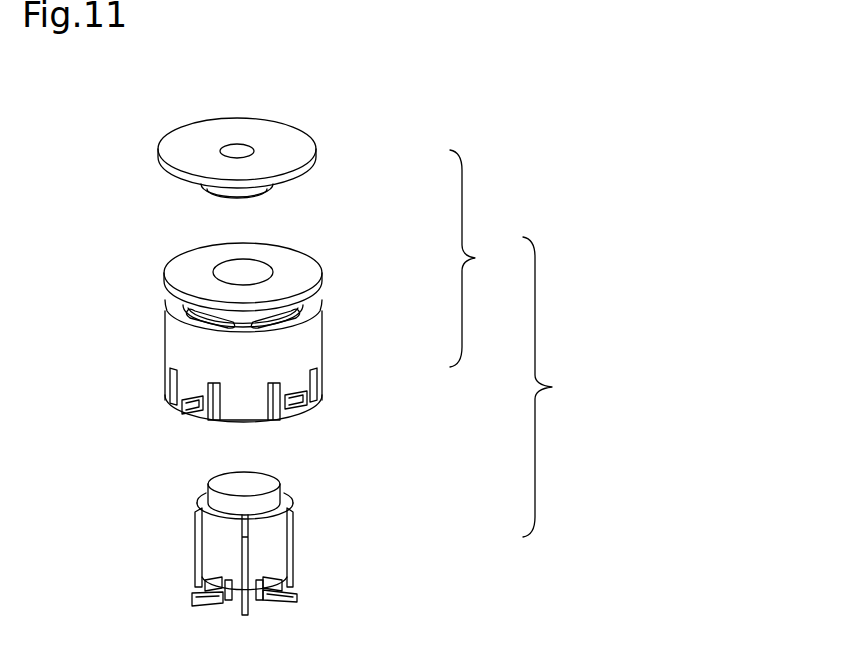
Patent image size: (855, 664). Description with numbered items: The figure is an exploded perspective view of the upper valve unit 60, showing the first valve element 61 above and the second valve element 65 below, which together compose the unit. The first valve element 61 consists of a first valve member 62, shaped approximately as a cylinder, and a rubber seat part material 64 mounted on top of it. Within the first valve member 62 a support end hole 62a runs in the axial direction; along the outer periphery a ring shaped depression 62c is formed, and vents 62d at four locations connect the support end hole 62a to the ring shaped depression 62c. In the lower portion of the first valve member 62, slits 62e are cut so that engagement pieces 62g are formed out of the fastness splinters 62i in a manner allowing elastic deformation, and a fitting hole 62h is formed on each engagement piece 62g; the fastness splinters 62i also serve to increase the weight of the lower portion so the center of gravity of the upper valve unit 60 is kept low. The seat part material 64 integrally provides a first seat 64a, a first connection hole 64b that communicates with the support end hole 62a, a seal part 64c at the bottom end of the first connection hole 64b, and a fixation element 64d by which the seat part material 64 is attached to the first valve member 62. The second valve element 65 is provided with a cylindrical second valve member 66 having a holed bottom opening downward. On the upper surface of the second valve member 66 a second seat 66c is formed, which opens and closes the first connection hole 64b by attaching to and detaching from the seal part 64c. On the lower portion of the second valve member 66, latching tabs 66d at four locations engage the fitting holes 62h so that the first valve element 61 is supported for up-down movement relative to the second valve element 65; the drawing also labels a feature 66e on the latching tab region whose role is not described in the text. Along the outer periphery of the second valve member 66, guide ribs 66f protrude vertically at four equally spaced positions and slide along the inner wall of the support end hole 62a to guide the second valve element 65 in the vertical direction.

The upper valve unit 60 is at (555, 387).
The first valve element 61 is at (481, 258).
The first valve member 62 is at (250, 355).
The support end hole 62a is at (230, 270).
The ring shaped depression 62c is at (178, 311).
The vent 62d is at (203, 320).
The slit 62e is at (320, 393).
The engagement piece 62g is at (298, 387).
The fitting hole 62h is at (308, 412).
The fastness splinter 62i is at (247, 412).
The seat part material 64 is at (247, 146).
The first seat 64a is at (293, 133).
The first connection hole 64b is at (233, 148).
The seal part 64c is at (237, 195).
The fixation element 64d is at (203, 191).
The second valve element 65 is at (303, 530).
The second valve member 66 is at (243, 562).
The second seat 66c is at (265, 492).
The latching tab 66d is at (297, 598).
The terminal 66e is at (283, 605).
The guide rib 66f is at (293, 565).